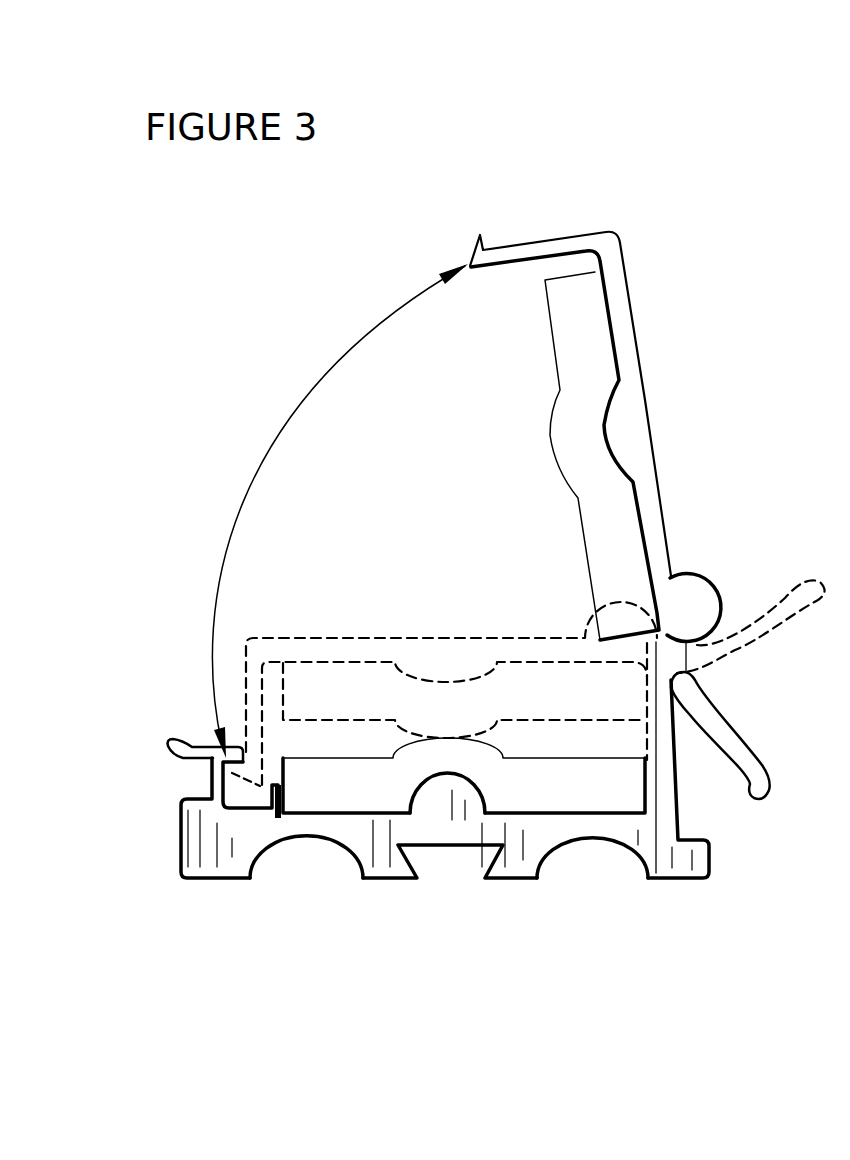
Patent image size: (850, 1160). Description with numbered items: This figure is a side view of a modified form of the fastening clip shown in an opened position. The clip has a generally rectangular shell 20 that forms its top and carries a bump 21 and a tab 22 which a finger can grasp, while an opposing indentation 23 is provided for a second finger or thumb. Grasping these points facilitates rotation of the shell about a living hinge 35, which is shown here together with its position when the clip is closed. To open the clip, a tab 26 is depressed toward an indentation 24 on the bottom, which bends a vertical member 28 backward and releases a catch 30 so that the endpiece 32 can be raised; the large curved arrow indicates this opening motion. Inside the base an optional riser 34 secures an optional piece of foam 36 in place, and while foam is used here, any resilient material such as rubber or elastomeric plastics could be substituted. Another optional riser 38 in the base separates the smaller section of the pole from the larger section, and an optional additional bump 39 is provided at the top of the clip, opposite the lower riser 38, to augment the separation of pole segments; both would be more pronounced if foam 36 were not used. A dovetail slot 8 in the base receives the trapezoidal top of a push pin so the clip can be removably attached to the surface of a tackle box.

The dovetail slot 8 is at (460, 866).
The shell 20 is at (628, 283).
The bump 21 is at (690, 570).
The tab 22 is at (725, 745).
The indentation 23 is at (622, 865).
The indentation 24 is at (297, 872).
The tab 26 is at (178, 743).
The vertical member 28 is at (212, 773).
The catch 30 is at (484, 246).
The endpiece 32 is at (578, 236).
The riser 34 is at (272, 815).
The living hinge 35 is at (663, 638).
The foam 36 is at (370, 797).
The riser 38 is at (438, 803).
The bump 39 is at (633, 420).